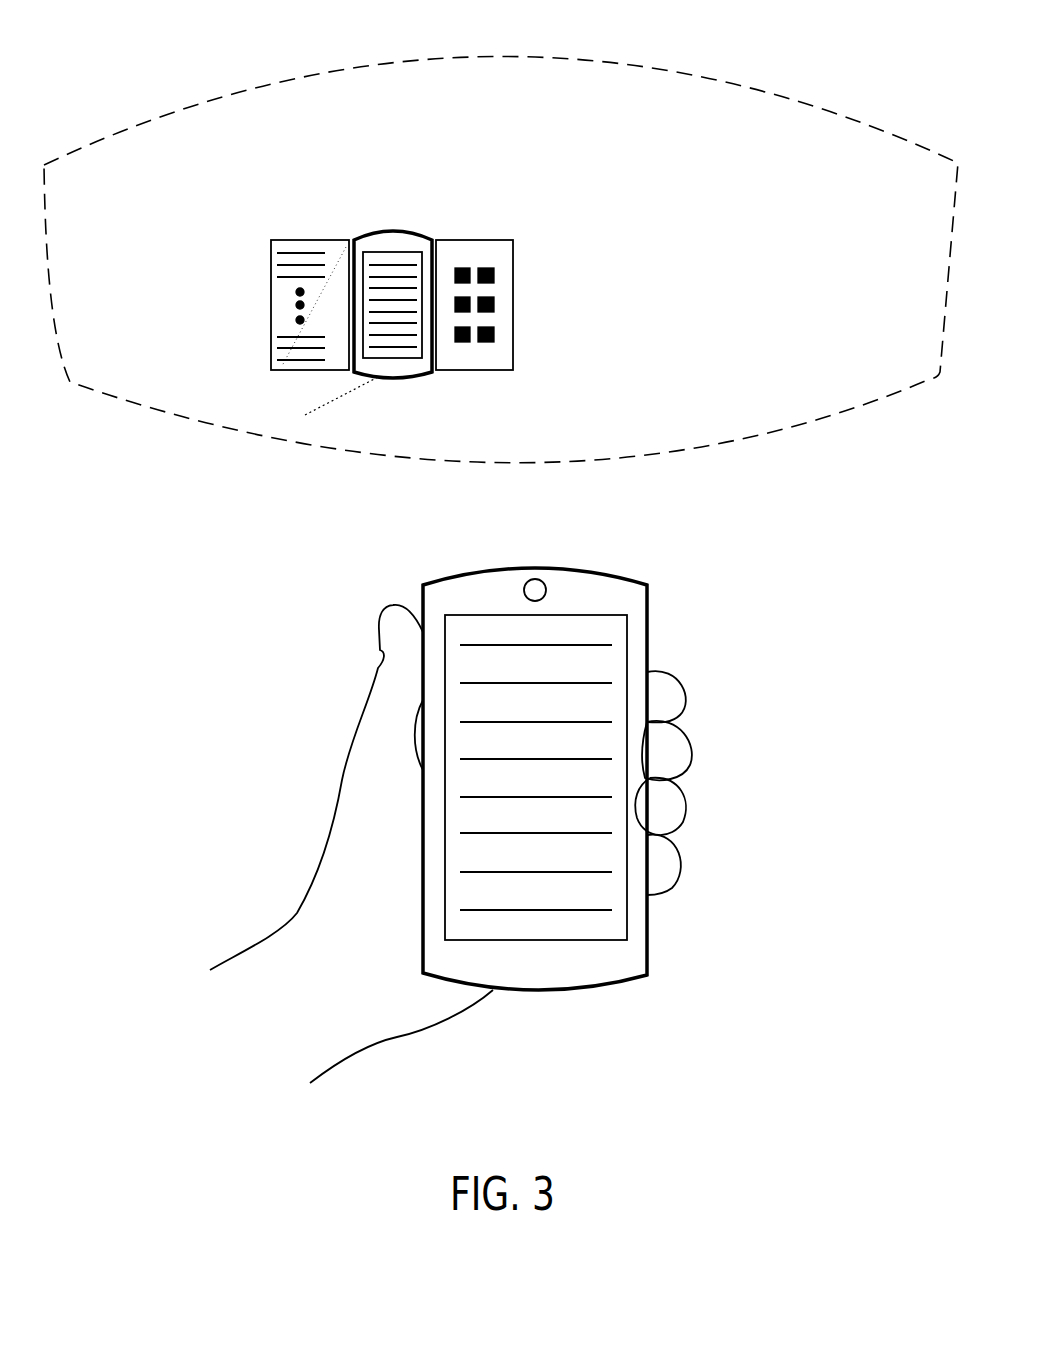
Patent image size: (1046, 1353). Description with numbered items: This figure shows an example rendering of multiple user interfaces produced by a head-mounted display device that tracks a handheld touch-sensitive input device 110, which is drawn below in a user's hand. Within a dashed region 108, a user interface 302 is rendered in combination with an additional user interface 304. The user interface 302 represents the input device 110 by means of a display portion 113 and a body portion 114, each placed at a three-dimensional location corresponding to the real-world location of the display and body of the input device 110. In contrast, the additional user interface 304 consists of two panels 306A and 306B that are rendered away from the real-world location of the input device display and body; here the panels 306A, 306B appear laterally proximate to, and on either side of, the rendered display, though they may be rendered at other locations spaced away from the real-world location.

The region 108 is at (511, 57).
The touch-sensitive input device 110 is at (679, 620).
The display portion 113 is at (397, 358).
The body portion 114 is at (420, 375).
The user interface 302 is at (397, 284).
The additional user interface 304 is at (392, 274).
The panel 306A is at (270, 322).
The panel 306B is at (514, 322).